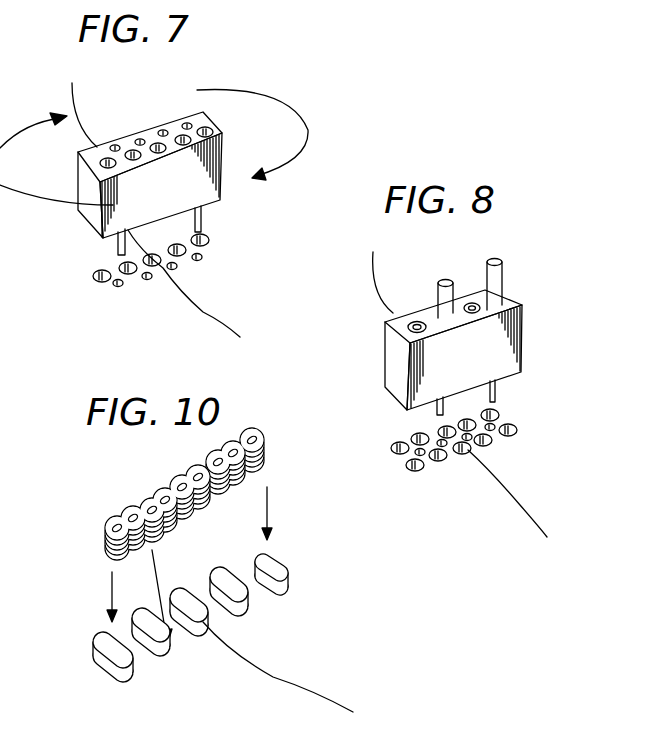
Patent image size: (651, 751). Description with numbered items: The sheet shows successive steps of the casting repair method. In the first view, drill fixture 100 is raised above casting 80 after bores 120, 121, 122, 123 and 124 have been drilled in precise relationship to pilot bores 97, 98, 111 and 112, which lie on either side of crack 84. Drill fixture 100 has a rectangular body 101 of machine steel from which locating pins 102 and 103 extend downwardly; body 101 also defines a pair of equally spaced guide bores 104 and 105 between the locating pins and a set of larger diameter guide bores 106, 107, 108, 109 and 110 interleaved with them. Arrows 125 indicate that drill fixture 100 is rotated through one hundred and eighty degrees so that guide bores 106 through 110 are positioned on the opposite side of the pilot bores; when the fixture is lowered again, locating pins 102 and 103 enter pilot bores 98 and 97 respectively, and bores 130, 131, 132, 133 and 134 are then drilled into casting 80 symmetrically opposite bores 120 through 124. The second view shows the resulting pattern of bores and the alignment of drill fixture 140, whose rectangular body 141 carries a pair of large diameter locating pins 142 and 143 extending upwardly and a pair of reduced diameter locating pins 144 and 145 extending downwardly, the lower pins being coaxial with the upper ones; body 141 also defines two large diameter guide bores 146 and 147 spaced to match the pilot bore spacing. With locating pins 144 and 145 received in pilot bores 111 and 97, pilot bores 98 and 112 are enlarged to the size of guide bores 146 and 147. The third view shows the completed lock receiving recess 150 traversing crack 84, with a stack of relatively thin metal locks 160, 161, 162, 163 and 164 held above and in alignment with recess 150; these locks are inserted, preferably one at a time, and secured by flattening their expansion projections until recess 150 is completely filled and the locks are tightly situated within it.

In FIG. 7, the casting 80 is at (190, 289).
In FIG. 8, the casting 80 is at (454, 477).
In FIG. 10, the casting 80 is at (283, 666).
In FIG. 7, the crack 84 is at (220, 318).
In FIG. 8, the crack 84 is at (532, 518).
In FIG. 10, the crack 84 is at (312, 688).
In FIG. 7, the pilot bore 97 is at (203, 257).
In FIG. 8, the pilot bore 97 is at (500, 417).
In FIG. 7, the pilot bore 98 is at (118, 288).
In FIG. 8, the pilot bore 98 is at (422, 457).
In FIG. 7, the drill fixture 100 is at (157, 163).
In FIG. 7, the rectangular body 101 is at (140, 138).
In FIG. 7, the locating pin 102 is at (118, 252).
In FIG. 7, the locating pin 103 is at (202, 222).
In FIG. 7, the guide bore 104 is at (163, 129).
In FIG. 7, the guide bore 105 is at (133, 150).
In FIG. 7, the guide bore 106 is at (214, 131).
In FIG. 7, the guide bore 107 is at (187, 145).
In FIG. 7, the guide bore 108 is at (159, 153).
In FIG. 7, the guide bore 109 is at (133, 160).
In FIG. 7, the guide bore 110 is at (100, 163).
In FIG. 7, the pilot bore 111 is at (150, 280).
In FIG. 8, the pilot bore 111 is at (445, 448).
In FIG. 7, the pilot bore 112 is at (176, 270).
In FIG. 8, the pilot bore 112 is at (473, 440).
In FIG. 7, the bore 120 is at (100, 283).
In FIG. 8, the bore 120 is at (391, 448).
In FIG. 7, the bore 121 is at (129, 275).
In FIG. 8, the bore 121 is at (411, 438).
In FIG. 7, the bore 122 is at (155, 254).
In FIG. 8, the bore 122 is at (438, 430).
In FIG. 7, the bore 123 is at (184, 253).
In FIG. 8, the bore 123 is at (472, 411).
In FIG. 7, the bore 124 is at (210, 242).
In FIG. 8, the bore 124 is at (498, 409).
In FIG. 7, the arrows 125 is at (287, 100).
In FIG. 8, the bore 130 is at (517, 432).
In FIG. 8, the bore 131 is at (490, 443).
In FIG. 8, the bore 132 is at (465, 455).
In FIG. 8, the bore 133 is at (442, 461).
In FIG. 8, the bore 134 is at (406, 467).
In FIG. 8, the drill fixture 140 is at (423, 314).
In FIG. 8, the rectangular body 141 is at (427, 320).
In FIG. 8, the locating pin 142 is at (440, 283).
In FIG. 8, the locating pin 143 is at (497, 288).
In FIG. 8, the locating pin 144 is at (442, 381).
In FIG. 8, the locating pin 145 is at (501, 380).
In FIG. 8, the guide bore 146 is at (418, 321).
In FIG. 8, the guide bore 147 is at (472, 303).
In FIG. 10, the lock receiving recess 150 is at (170, 648).
In FIG. 10, the metal lock 160 is at (141, 510).
In FIG. 10, the metal lock 161 is at (104, 546).
In FIG. 10, the metal lock 162 is at (104, 540).
In FIG. 10, the metal lock 163 is at (104, 535).
In FIG. 10, the metal lock 164 is at (130, 507).